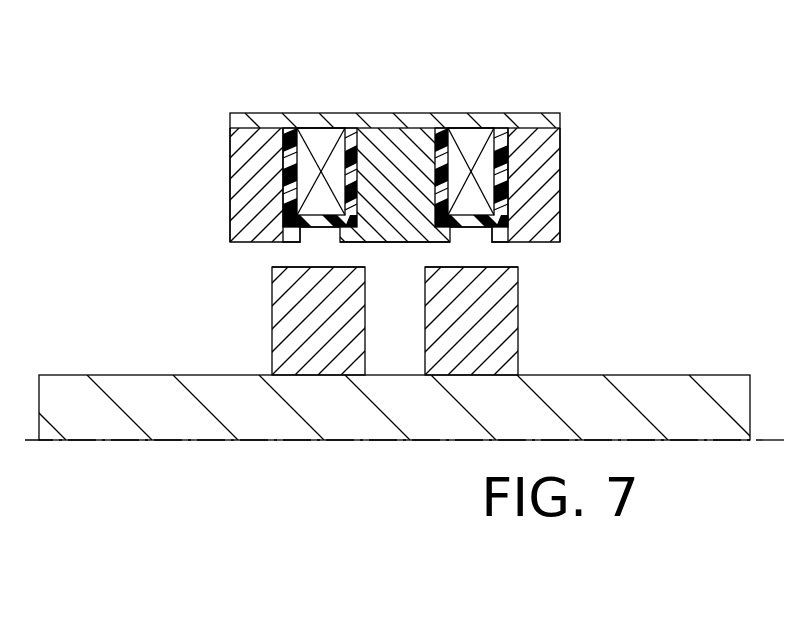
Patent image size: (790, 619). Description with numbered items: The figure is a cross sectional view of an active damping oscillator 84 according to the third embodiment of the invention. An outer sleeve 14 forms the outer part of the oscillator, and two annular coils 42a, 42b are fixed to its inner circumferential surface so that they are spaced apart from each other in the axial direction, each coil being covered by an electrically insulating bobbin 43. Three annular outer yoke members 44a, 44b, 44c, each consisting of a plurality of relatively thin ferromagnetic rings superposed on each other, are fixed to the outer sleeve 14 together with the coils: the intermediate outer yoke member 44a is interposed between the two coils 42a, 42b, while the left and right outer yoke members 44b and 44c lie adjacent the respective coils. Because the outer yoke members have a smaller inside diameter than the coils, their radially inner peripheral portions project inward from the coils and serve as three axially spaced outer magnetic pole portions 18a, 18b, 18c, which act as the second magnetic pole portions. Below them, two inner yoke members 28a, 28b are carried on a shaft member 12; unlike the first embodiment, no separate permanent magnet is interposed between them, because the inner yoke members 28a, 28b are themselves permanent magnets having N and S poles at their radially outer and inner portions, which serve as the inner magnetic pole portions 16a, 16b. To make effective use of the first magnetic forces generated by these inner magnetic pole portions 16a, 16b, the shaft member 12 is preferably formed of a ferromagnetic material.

The shaft member 12 is at (120, 387).
The outer sleeve 14 is at (248, 120).
The inner magnetic pole portion 16a is at (300, 273).
The inner magnetic pole portion 16b is at (494, 273).
The outer magnetic pole portion 18a is at (412, 235).
The outer magnetic pole portion 18b is at (264, 238).
The outer magnetic pole portion 18c is at (539, 238).
The inner yoke member 28a is at (258, 335).
The inner yoke member 28b is at (528, 335).
The annular coil 42a is at (326, 136).
The annular coil 42b is at (482, 138).
The electrically insulating bobbin 43 is at (288, 200).
The intermediate outer yoke member 44a is at (368, 104).
The left outer yoke member 44b is at (218, 155).
The right outer yoke member 44c is at (572, 183).
The active damping oscillator 84 is at (130, 188).